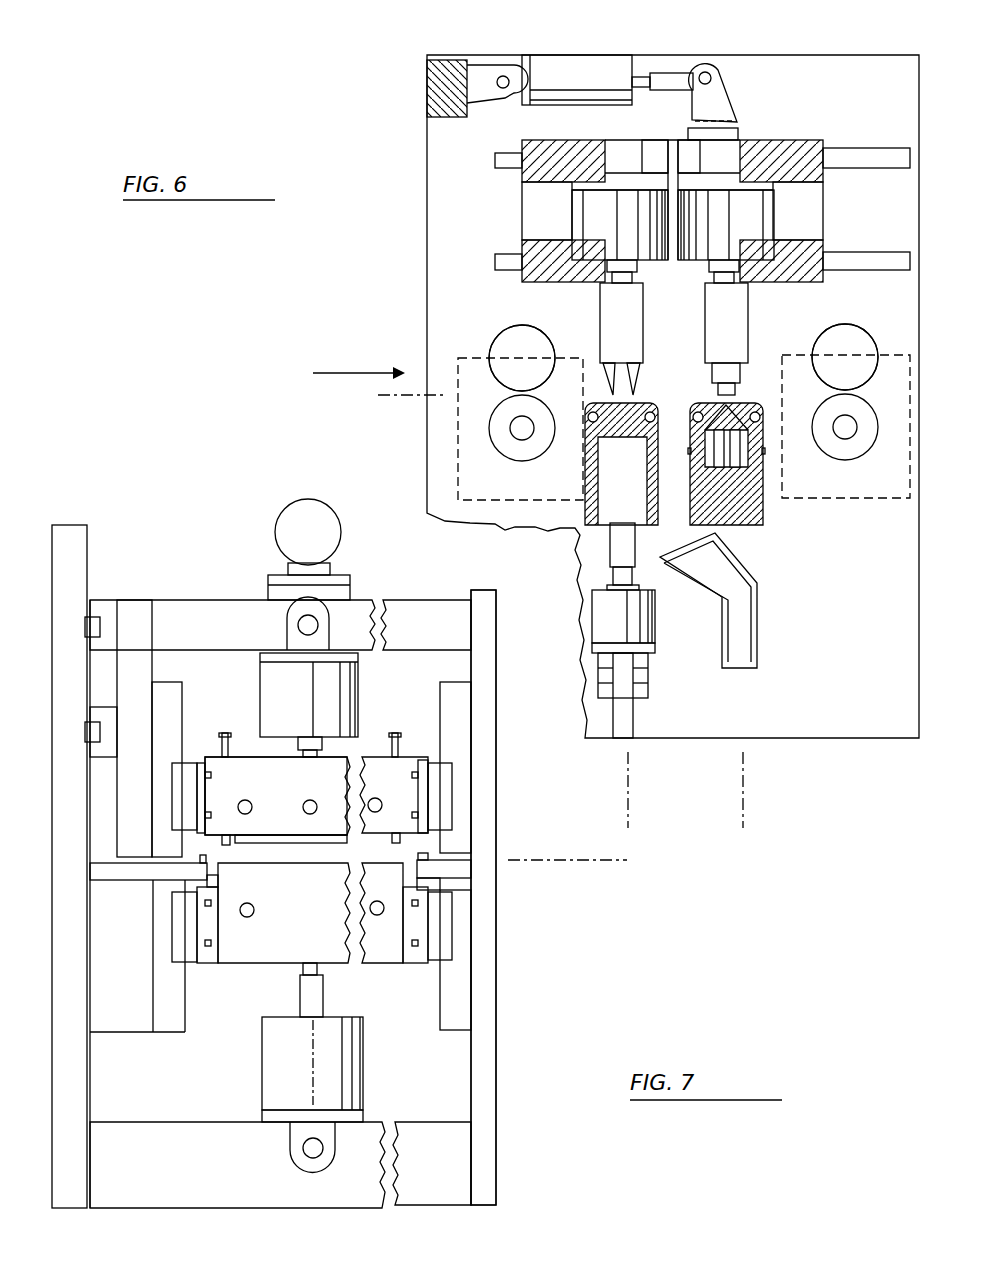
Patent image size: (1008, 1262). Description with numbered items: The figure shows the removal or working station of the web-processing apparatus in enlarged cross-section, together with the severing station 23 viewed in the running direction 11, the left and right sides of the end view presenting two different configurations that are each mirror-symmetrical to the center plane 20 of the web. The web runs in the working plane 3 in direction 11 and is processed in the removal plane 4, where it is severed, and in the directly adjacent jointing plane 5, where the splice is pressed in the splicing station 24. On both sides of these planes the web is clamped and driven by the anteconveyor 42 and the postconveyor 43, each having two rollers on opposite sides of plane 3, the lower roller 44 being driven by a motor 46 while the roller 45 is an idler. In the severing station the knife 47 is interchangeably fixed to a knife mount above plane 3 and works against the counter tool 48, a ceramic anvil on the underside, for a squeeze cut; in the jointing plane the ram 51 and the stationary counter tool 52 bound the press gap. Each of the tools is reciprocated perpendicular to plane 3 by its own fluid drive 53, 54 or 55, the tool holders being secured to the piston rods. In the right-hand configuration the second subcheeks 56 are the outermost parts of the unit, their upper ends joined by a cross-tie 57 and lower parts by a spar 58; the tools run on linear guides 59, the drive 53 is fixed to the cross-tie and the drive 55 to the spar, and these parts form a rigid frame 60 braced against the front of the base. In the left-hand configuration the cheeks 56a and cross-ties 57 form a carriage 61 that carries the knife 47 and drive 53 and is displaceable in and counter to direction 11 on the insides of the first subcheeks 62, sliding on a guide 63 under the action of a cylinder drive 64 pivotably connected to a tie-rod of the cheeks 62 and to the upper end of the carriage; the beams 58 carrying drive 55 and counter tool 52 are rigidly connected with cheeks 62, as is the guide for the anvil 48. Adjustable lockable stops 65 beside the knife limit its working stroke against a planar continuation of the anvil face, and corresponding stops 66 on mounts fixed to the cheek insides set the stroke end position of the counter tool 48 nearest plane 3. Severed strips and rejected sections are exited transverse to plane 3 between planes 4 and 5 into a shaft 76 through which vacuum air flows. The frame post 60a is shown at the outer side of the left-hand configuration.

In FIG. 6, the web/working plane 3 is at (398, 398).
In FIG. 7, the web/working plane 3 is at (578, 862).
In FIG. 6, the removal plane 4 is at (628, 812).
In FIG. 6, the jointing plane 5 is at (743, 812).
In FIG. 6, the running direction 11 is at (358, 358).
In FIG. 7, the center plane 20 is at (307, 1088).
In FIG. 6, the severing station 23 is at (598, 316).
In FIG. 7, the severing station 23 is at (368, 734).
In FIG. 6, the splicing station 24 is at (700, 307).
In FIG. 6, the anteconveyor 42 is at (488, 335).
In FIG. 6, the postconveyor 43 is at (851, 470).
In FIG. 6, the lower roller 44 is at (517, 450).
In FIG. 6, the idler roller 45 is at (505, 382).
In FIG. 6, the motor 46 is at (458, 362).
In FIG. 6, the knife 47 is at (640, 363).
In FIG. 7, the knife 47 is at (287, 838).
In FIG. 6, the counter tool 48 is at (625, 440).
In FIG. 7, the counter tool 48 is at (315, 860).
In FIG. 6, the ram 51 is at (726, 375).
In FIG. 6, the counter tool 52 is at (716, 415).
In FIG. 6, the drive 53 is at (596, 225).
In FIG. 7, the drive 53 is at (280, 702).
In FIG. 6, the drive 54 is at (745, 222).
In FIG. 6, the drive 55 is at (610, 618).
In FIG. 7, the drive 55 is at (270, 1050).
In FIG. 7, the second subcheek 56 is at (475, 1074).
In FIG. 6, the subcheek 56a is at (818, 220).
In FIG. 7, the subcheek 56a is at (132, 612).
In FIG. 7, the cross-tie 57 is at (428, 598).
In FIG. 6, the spar 58 is at (742, 520).
In FIG. 7, the spar 58 is at (213, 1122).
In FIG. 7, the guide 59 is at (433, 744).
In FIG. 7, the rigid frame 60 is at (488, 582).
In FIG. 7, the frame post 60a is at (112, 553).
In FIG. 6, the carriage 61 is at (770, 125).
In FIG. 7, the carriage 61 is at (232, 588).
In FIG. 6, the first subcheek 62 is at (440, 252).
In FIG. 7, the first subcheek 62 is at (90, 1082).
In FIG. 6, the guide 63 is at (835, 140).
In FIG. 6, the drive 64 is at (552, 98).
In FIG. 7, the drive 64 is at (292, 515).
In FIG. 7, the adjustable stop 65 is at (218, 830).
In FIG. 7, the stop 66 is at (427, 882).
In FIG. 6, the shaft 76 is at (757, 615).